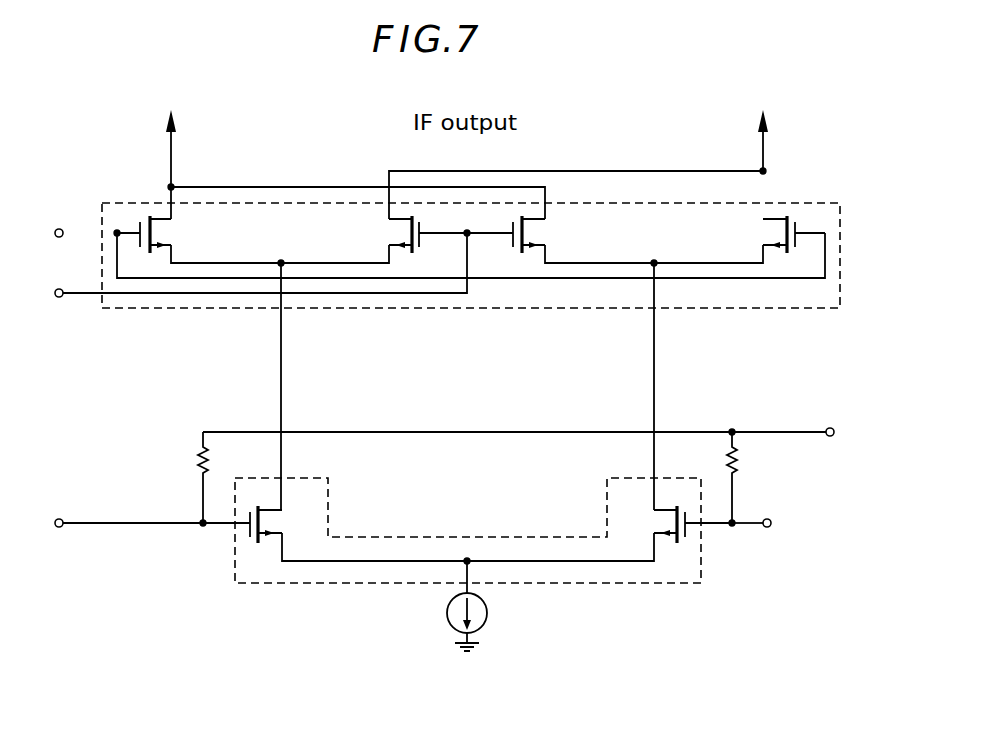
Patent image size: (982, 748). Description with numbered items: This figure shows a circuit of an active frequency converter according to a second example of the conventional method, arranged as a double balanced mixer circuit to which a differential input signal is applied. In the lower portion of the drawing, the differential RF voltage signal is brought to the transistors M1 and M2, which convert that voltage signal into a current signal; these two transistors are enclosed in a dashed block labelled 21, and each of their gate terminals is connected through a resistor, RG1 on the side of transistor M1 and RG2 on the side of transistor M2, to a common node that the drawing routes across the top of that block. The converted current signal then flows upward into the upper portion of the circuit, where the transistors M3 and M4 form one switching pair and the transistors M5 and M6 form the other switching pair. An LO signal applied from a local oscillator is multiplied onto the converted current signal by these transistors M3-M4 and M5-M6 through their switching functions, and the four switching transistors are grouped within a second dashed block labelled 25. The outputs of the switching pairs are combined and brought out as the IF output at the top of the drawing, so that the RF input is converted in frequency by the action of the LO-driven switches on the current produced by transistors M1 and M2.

The RF input transconductance stage 21 is at (702, 557).
The LO switching stage 25 is at (841, 221).
The transistor M1 is at (258, 524).
The transistor M2 is at (675, 524).
The transistor M3 is at (161, 234).
The transistor M4 is at (412, 234).
The transistor M5 is at (521, 234).
The transistor M6 is at (777, 234).
The first gate bias resistor RG1 is at (185, 477).
The second gate bias resistor RG2 is at (752, 477).